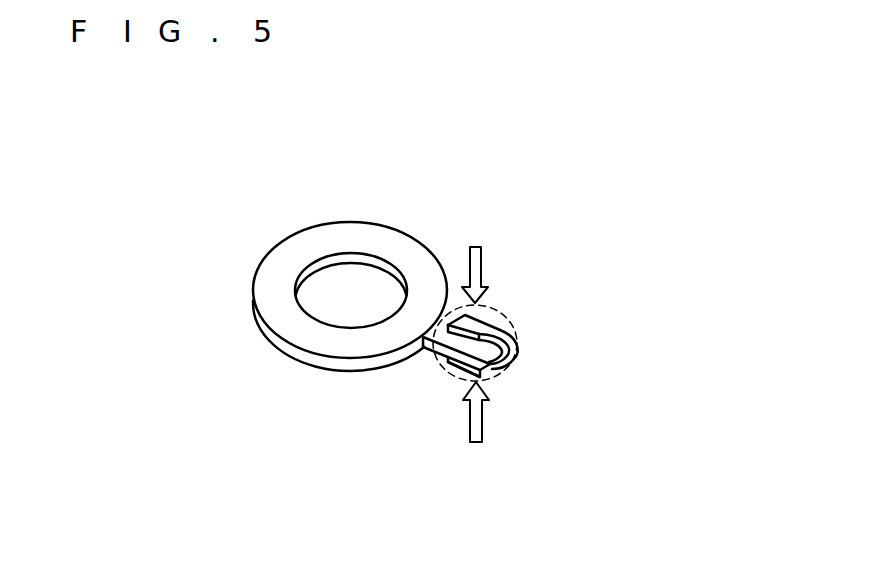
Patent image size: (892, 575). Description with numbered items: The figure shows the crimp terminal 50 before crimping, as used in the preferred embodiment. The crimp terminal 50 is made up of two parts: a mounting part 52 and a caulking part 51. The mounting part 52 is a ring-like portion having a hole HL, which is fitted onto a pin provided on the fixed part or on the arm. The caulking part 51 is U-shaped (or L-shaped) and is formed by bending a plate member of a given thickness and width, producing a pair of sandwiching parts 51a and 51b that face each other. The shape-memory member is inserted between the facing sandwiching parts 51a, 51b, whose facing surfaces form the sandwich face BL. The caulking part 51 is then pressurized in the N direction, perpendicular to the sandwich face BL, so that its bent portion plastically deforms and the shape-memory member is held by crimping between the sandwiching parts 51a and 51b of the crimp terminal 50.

The crimp terminal 50 is at (603, 167).
The caulking part 51 is at (510, 313).
The sandwiching part 51a is at (483, 309).
The sandwiching part 51b is at (497, 377).
The mounting part 52 is at (296, 252).
The hole HL is at (352, 283).
The sandwich face BL is at (455, 365).
The N direction N is at (475, 329).